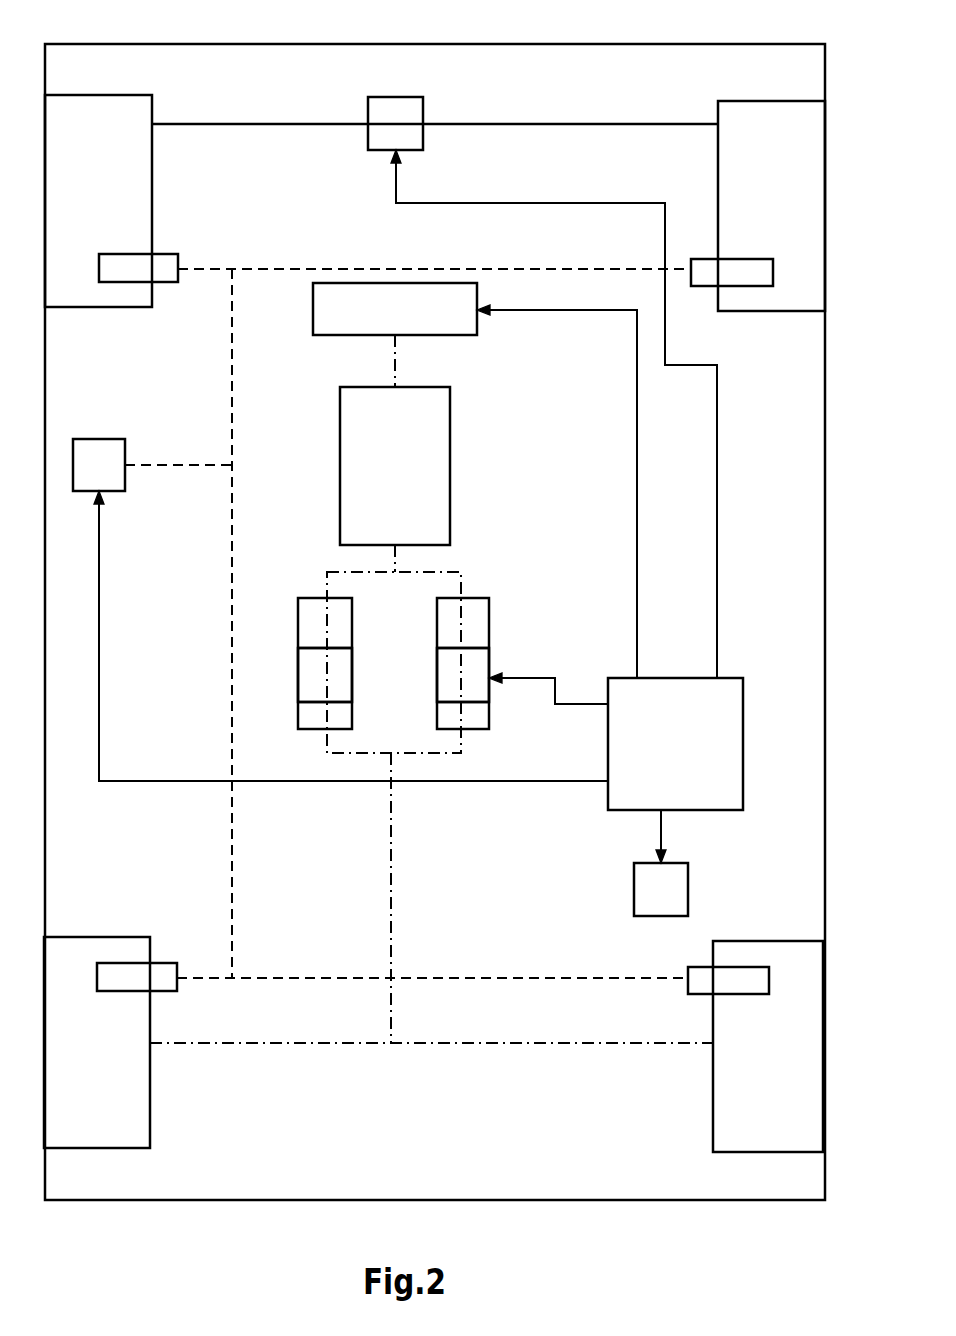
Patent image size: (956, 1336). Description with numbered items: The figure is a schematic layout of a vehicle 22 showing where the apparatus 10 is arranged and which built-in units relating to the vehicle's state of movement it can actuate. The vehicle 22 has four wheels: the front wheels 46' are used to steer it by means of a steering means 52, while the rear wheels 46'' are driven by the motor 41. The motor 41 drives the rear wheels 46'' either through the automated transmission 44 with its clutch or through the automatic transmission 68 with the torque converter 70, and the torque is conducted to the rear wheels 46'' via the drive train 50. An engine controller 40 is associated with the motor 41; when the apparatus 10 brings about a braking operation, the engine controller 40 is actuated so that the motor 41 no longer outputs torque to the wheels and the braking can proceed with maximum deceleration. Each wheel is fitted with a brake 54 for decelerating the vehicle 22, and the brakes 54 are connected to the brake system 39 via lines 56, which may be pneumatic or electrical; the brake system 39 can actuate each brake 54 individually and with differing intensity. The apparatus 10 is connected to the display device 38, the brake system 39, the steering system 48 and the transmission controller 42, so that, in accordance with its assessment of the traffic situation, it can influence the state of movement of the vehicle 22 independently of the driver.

The apparatus 10 is at (692, 759).
The vehicle 22 is at (413, 1175).
The display device 38 is at (679, 902).
The brake system 39 is at (100, 438).
The engine controller 40 is at (416, 328).
The engine 41 is at (417, 477).
The transmission controller 42 is at (479, 697).
The automated transmission 44 is at (490, 623).
The front wheels 46' is at (435, 203).
The rear wheels 46'' is at (433, 1044).
The steering system 48 is at (423, 97).
The drive train 50 is at (392, 861).
The steering means 52 is at (236, 122).
The brakes 54 is at (163, 253).
The lines 56 is at (232, 686).
The automatic transmission 68 is at (297, 620).
The torque converter 70 is at (343, 697).